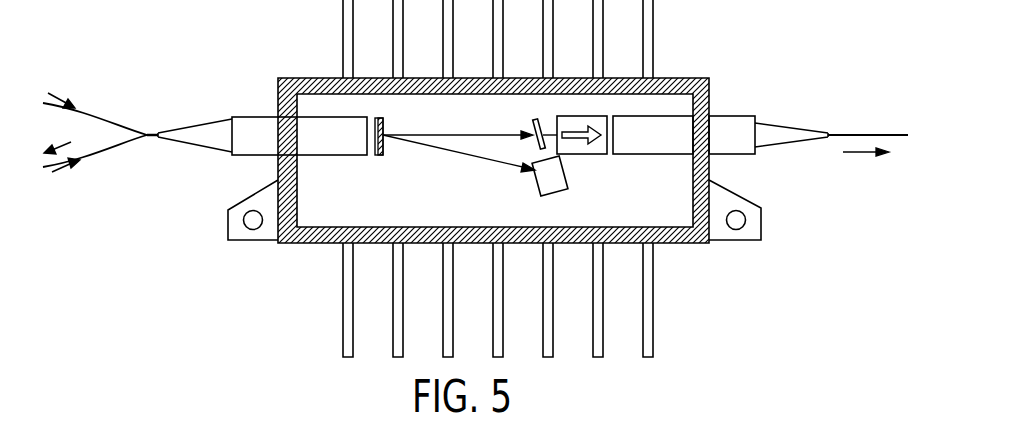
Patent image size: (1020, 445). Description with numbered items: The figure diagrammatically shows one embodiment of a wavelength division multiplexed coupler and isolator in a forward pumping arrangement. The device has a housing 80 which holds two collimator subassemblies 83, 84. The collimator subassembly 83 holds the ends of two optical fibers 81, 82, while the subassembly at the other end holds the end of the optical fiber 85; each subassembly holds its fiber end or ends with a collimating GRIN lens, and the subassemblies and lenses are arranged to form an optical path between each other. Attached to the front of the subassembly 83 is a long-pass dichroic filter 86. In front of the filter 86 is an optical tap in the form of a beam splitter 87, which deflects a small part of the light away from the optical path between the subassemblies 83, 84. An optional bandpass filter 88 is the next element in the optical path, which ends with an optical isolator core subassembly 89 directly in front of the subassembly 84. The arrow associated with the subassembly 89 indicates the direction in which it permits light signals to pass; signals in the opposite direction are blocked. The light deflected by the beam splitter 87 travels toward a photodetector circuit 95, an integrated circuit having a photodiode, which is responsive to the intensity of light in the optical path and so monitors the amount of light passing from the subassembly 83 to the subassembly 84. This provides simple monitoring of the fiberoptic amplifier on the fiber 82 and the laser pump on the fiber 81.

The housing 80 is at (695, 78).
The optical fiber 81 is at (87, 122).
The optical fiber 82 is at (95, 148).
The collimator subassembly 83 is at (318, 163).
The collimator subassembly 84 is at (657, 152).
The optical fiber 85 is at (853, 133).
The long-pass dichroic filter 86 is at (379, 158).
The beam splitter 87 is at (385, 120).
The bandpass filter 88 is at (538, 125).
The optical isolator core subassembly 89 is at (595, 152).
The photodetector circuit 95 is at (537, 193).